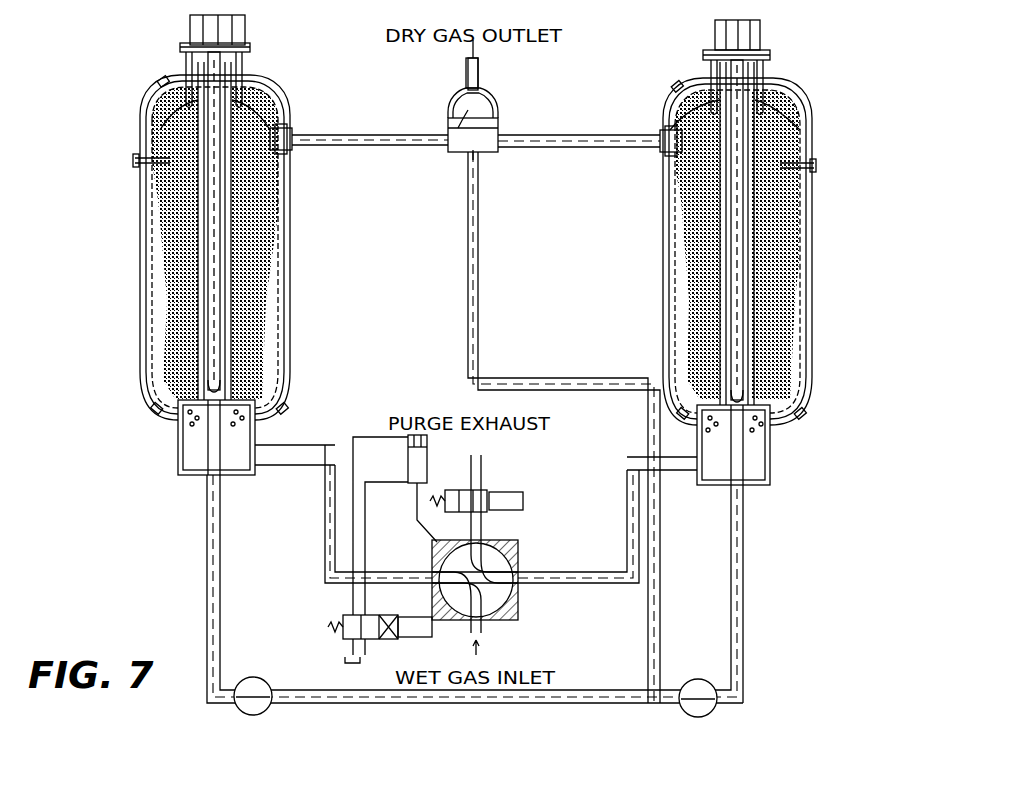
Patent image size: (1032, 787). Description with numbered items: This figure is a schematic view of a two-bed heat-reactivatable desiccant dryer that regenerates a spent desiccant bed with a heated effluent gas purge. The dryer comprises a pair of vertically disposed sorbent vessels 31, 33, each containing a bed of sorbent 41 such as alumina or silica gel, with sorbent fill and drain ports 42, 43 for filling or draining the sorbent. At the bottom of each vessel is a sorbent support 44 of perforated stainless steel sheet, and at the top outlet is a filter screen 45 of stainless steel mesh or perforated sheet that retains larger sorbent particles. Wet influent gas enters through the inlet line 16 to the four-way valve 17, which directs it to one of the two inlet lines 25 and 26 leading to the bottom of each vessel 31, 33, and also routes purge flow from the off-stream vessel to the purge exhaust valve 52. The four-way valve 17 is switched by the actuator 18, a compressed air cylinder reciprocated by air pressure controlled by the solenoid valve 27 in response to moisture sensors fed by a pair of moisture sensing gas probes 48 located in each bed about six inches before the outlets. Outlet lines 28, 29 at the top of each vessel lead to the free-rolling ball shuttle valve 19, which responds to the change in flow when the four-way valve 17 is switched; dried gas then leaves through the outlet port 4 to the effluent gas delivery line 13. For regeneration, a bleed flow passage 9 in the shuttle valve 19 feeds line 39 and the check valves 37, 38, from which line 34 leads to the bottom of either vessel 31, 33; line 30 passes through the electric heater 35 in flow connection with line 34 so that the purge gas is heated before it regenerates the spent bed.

The outlet port 4 is at (476, 96).
The bleed flow passage 9 is at (480, 150).
The effluent gas delivery line 13 is at (467, 66).
The inlet line 16 is at (485, 630).
The four-way valve 17 is at (515, 600).
The actuator 18 is at (428, 462).
The free-rolling ball shuttle valve 19 is at (507, 115).
The inlet line 25 is at (325, 545).
The inlet line 26 is at (630, 512).
The solenoid valve 27 is at (343, 615).
The outlet line 28 is at (372, 132).
The outlet line 29 is at (615, 134).
The line 30 is at (195, 236).
The sorbent vessel 31 is at (140, 310).
The sorbent vessel 33 is at (812, 302).
The line 34 is at (207, 582).
The electric heater 35 is at (205, 70).
The check valve 37 is at (248, 715).
The check valve 38 is at (695, 718).
The line 39 is at (478, 345).
The bed of sorbent 41 is at (240, 272).
The sorbent fill port 42 is at (158, 82).
The sorbent drain port 43 is at (156, 415).
The sorbent support 44 is at (178, 408).
The filter screen 45 is at (282, 126).
The moisture sensing gas probe 48 is at (172, 172).
The purge exhaust valve 52 is at (499, 480).